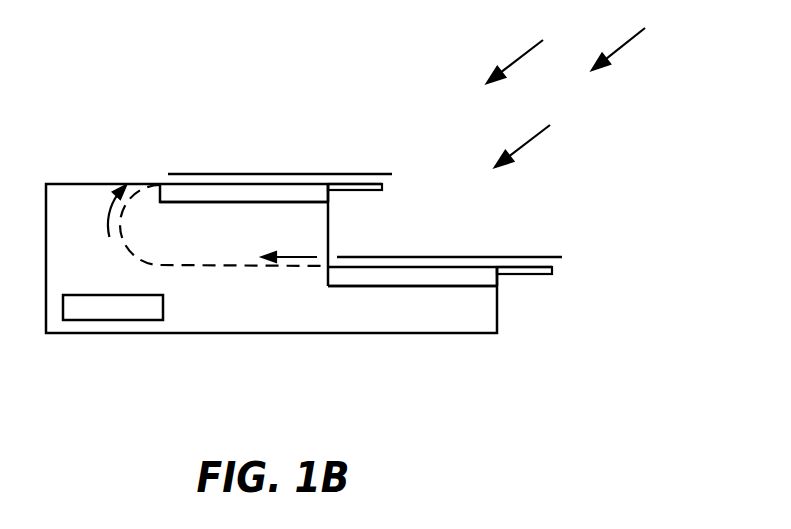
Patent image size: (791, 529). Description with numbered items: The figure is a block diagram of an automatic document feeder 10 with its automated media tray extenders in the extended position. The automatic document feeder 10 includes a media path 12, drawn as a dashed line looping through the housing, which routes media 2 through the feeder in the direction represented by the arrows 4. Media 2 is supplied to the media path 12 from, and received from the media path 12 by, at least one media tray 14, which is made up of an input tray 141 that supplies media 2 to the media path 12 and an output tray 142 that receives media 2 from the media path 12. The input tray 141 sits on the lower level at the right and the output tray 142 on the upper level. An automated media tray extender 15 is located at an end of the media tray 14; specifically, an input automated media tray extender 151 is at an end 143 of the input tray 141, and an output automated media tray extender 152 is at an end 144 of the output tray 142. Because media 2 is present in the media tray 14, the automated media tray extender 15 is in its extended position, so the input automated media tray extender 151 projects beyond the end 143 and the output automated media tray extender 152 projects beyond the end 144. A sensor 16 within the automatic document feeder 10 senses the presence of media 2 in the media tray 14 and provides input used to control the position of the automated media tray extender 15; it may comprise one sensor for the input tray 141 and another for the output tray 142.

The automatic document feeder 10 is at (633, 38).
The media tray 14 is at (530, 52).
The automated media tray extender 15 is at (537, 137).
The media 2 is at (290, 172).
The arrows 4 is at (109, 212).
The media path 12 is at (242, 268).
The sensor 16 is at (110, 320).
The input tray 141 is at (395, 272).
The output tray 142 is at (233, 188).
The end of input tray 143 is at (497, 278).
The end of output tray 144 is at (328, 193).
The input automated media tray extender 151 is at (545, 273).
The output automated media tray extender 152 is at (380, 191).